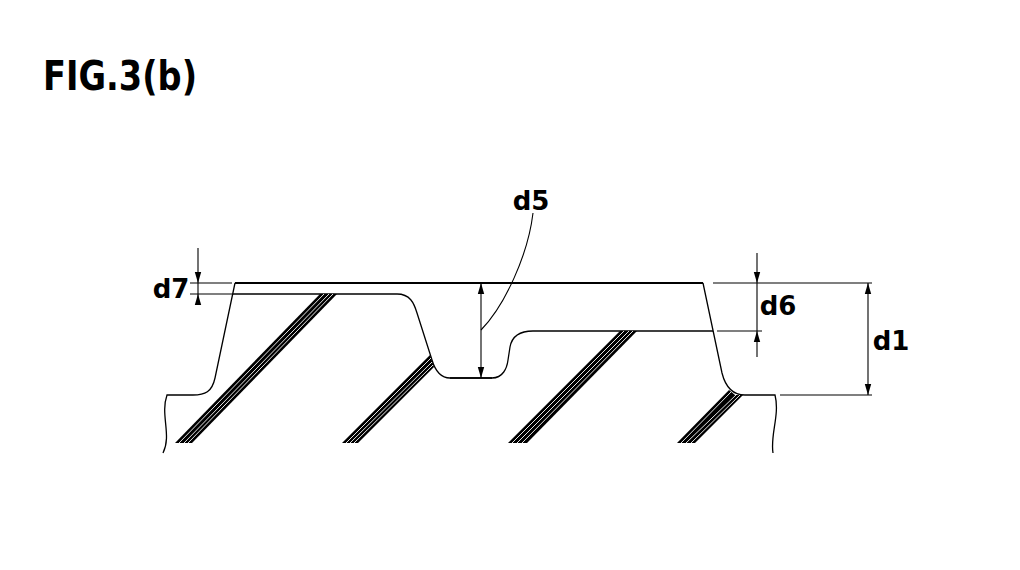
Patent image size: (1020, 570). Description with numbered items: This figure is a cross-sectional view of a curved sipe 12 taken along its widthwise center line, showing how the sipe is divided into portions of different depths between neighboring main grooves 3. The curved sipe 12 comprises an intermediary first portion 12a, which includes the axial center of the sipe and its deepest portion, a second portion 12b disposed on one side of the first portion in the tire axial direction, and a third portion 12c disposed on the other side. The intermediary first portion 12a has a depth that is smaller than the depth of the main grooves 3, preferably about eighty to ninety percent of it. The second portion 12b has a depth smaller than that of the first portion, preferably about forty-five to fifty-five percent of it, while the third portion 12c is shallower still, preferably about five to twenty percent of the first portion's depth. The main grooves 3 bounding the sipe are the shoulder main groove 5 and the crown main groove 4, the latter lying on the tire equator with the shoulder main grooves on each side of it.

The curved sipe 12 is at (435, 318).
The intermediary first portion 12a is at (460, 353).
The second portion 12b is at (613, 325).
The third portion 12c is at (307, 291).
The shoulder main groove 5 is at (200, 382).
The main groove 3 is at (514, 368).
The crown main groove 4 is at (737, 383).